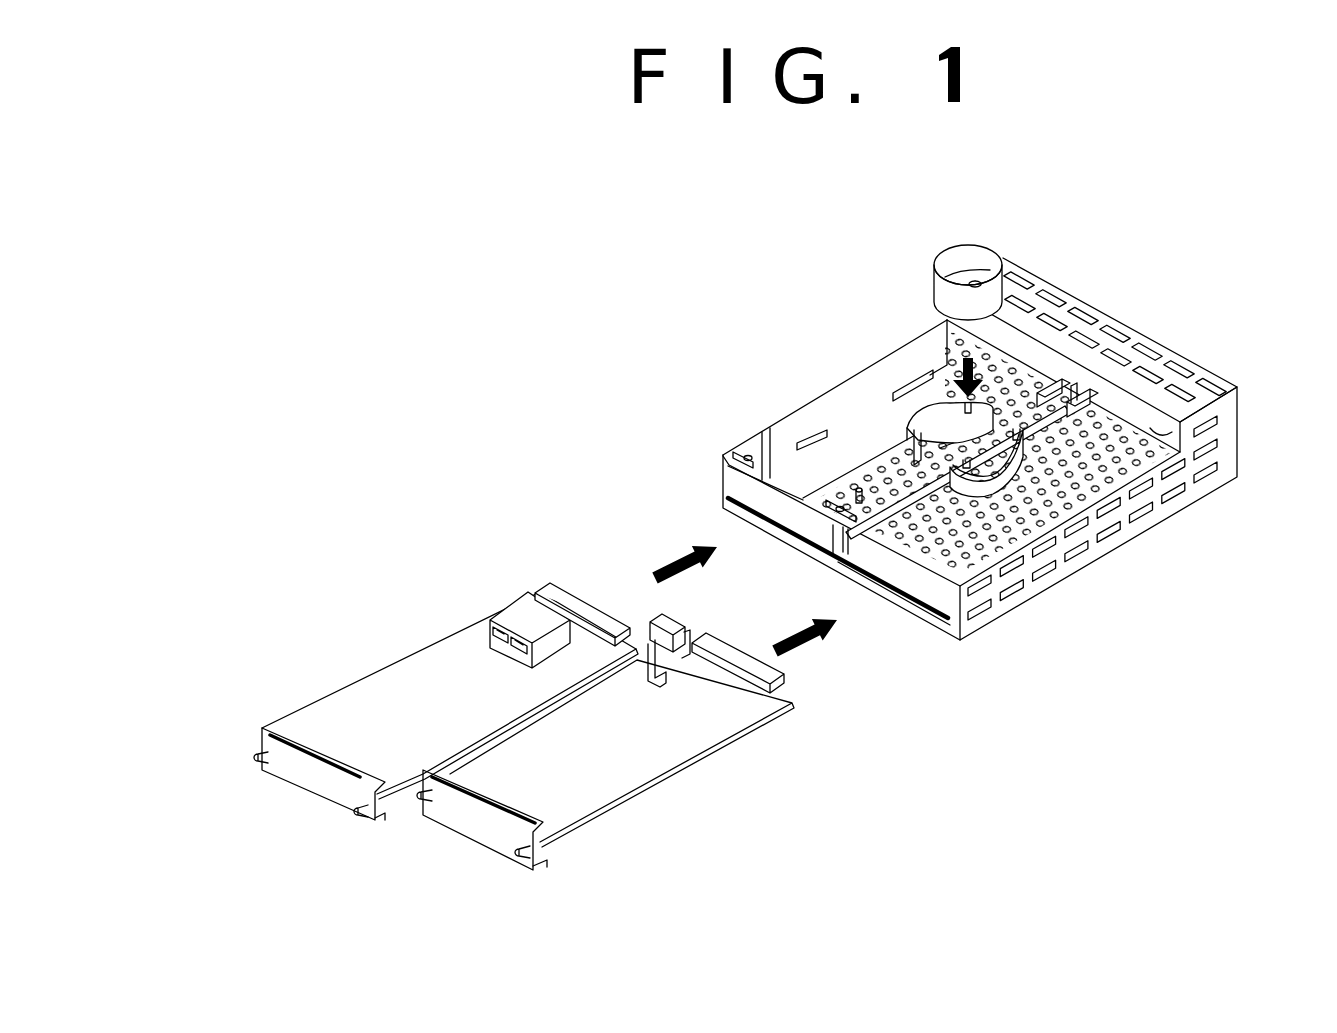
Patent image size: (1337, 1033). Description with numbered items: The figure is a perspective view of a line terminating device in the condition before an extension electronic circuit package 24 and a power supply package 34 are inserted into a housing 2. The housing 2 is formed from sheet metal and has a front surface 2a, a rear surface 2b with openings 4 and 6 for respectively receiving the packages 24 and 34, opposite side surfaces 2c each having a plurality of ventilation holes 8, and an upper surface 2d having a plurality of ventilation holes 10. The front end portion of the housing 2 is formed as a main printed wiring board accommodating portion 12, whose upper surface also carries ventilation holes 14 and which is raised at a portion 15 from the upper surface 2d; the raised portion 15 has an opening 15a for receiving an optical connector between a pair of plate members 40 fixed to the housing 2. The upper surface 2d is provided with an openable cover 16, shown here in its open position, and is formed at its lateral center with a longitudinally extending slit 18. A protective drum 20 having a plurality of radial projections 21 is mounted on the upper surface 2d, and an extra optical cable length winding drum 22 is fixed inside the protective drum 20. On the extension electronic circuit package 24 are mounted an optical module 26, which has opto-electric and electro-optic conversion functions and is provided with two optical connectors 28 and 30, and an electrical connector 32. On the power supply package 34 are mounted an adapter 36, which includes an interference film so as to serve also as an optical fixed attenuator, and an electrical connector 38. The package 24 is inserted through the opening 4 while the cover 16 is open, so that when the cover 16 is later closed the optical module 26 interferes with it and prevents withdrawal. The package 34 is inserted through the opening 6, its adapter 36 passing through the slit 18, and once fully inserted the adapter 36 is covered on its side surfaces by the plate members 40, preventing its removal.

The housing 2 is at (1147, 323).
The front surface 2a is at (1206, 364).
The rear surface 2b is at (937, 632).
The side surfaces 2c is at (1063, 573).
The upper surface 2d is at (1153, 462).
The opening 4 is at (722, 492).
The opening 6 is at (915, 597).
The ventilation holes 8 is at (1020, 596).
The ventilation holes 10 is at (1092, 477).
The main printed wiring board accommodating portion 12 is at (1167, 353).
The ventilation holes 14 is at (1073, 382).
The raised portion 15 is at (1172, 430).
The opening 15a is at (1085, 398).
The cover 16 is at (788, 434).
The slit 18 is at (897, 505).
The protective drum 20 is at (940, 417).
The radial projections 21 is at (913, 430).
The extra optical cable length winding drum 22 is at (960, 246).
The extension electronic circuit package 24 is at (343, 700).
The optical module 26 is at (512, 617).
The optical connector 28 is at (510, 655).
The optical connector 30 is at (493, 629).
The electrical connector 32 is at (569, 584).
The power supply package 34 is at (628, 766).
The adapter 36 is at (670, 622).
The electrical connector 38 is at (755, 684).
The plate members 40 is at (1047, 384).